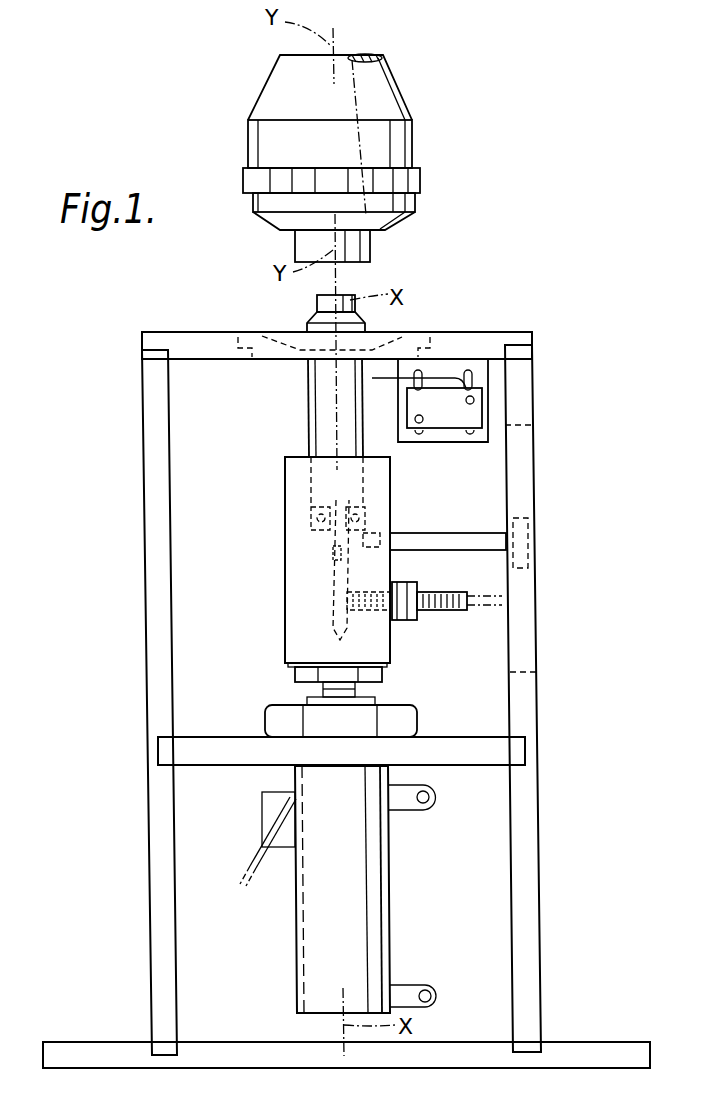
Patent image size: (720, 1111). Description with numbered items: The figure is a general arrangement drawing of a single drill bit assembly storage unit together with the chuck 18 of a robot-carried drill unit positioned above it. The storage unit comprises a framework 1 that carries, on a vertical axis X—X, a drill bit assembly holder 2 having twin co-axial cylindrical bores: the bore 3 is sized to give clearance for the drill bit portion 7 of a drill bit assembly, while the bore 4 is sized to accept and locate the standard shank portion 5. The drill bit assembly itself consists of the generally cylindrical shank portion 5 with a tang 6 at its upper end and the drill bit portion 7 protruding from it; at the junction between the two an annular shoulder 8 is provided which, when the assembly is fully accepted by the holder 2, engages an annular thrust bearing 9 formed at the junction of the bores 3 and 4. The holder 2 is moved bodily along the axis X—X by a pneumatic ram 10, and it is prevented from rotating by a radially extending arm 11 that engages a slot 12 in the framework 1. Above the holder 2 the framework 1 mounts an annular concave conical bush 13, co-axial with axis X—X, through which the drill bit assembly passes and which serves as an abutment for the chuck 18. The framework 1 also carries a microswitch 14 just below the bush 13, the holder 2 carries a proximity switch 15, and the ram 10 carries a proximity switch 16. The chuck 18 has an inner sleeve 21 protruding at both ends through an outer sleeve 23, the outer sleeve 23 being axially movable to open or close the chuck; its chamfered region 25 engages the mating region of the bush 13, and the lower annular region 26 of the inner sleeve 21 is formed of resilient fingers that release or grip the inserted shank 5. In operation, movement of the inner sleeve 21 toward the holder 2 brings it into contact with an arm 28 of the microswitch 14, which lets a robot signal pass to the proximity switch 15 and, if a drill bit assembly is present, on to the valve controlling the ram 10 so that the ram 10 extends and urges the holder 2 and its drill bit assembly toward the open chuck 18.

The framework 1 is at (530, 815).
The drill bit assembly locating device or holder 2 is at (287, 620).
The bore 3 is at (332, 556).
The bore 4 is at (316, 488).
The standard shank portion 5 is at (316, 412).
The tang 6 is at (318, 300).
The drill bit portion 7 is at (330, 585).
The annular shoulder 8 is at (360, 506).
The annular thrust bearing 9 is at (365, 528).
The pneumatic ram 10 is at (372, 896).
The radially extending arm 11 is at (460, 545).
The slot 12 is at (527, 647).
The annular concave conical bush 13 is at (402, 334).
The microswitch 14 is at (450, 419).
The proximity switch 15 is at (440, 612).
The proximity switch 16 is at (263, 819).
The chuck 18 is at (332, 158).
The inner sleeve 21 is at (297, 243).
The outer sleeve 23 is at (403, 145).
The chamfered region 25 is at (413, 222).
The lower annular region 26 is at (388, 247).
The arm 28 is at (392, 380).